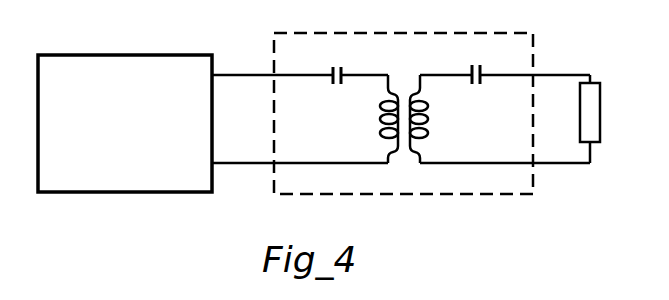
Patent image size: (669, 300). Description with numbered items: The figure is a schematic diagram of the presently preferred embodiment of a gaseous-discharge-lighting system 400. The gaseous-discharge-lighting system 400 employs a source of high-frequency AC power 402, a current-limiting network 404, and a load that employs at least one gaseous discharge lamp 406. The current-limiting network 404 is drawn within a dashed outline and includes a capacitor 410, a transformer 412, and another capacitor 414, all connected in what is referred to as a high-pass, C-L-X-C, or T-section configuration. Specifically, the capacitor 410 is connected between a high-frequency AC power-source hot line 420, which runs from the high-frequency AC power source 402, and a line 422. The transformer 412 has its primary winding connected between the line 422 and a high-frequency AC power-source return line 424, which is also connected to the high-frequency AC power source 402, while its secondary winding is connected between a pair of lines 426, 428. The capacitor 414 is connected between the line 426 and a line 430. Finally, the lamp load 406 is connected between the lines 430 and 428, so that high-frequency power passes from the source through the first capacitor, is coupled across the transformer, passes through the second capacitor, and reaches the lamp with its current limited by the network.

The gaseous-discharge-lighting system 400 is at (421, 196).
The source of high-frequency AC power 402 is at (160, 193).
The current-limiting network 404 is at (370, 195).
The gaseous discharge lamp 406 is at (600, 120).
The capacitor 410 is at (336, 84).
The transformer 412 is at (382, 123).
The capacitor 414 is at (477, 84).
The high-frequency AC power-source hot line 420 is at (252, 74).
The line 422 is at (373, 75).
The high-frequency AC power-source return line 424 is at (244, 164).
The line 426 is at (442, 75).
The line 428 is at (450, 164).
The line 430 is at (547, 73).